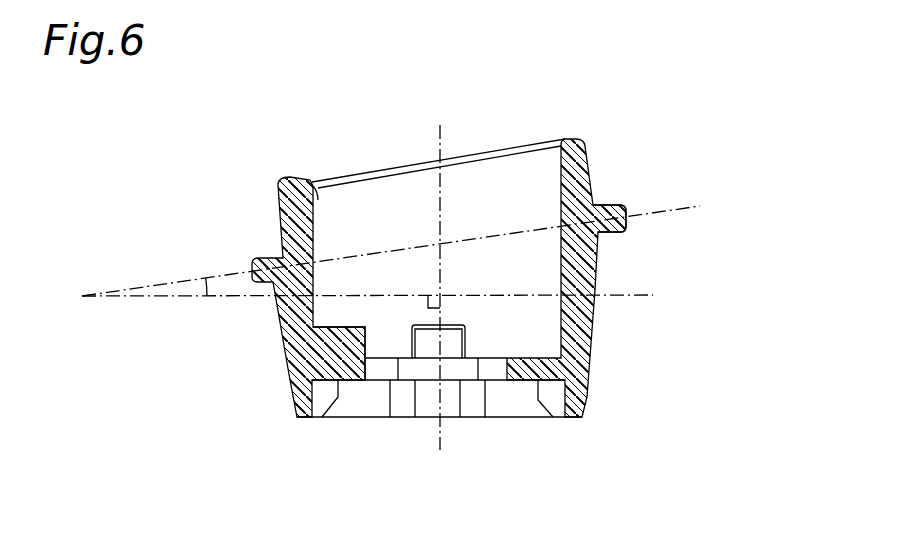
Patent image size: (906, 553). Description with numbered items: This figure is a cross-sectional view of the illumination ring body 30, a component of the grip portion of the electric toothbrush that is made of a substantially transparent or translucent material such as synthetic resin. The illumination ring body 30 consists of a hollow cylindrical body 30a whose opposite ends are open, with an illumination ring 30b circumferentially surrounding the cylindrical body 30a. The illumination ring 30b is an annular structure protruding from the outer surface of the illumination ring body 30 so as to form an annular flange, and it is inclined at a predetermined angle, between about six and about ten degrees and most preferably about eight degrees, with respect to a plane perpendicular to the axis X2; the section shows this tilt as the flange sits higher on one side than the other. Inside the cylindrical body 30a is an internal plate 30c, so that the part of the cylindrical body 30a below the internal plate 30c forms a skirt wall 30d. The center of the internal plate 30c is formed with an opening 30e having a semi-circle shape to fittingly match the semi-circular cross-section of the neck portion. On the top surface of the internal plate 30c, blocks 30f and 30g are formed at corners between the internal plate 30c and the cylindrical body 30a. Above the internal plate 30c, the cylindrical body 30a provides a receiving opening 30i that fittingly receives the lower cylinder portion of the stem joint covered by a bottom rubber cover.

The illumination ring body 30 is at (523, 139).
The cylindrical body 30a is at (581, 288).
The illumination ring 30b is at (627, 222).
The internal plate 30c is at (523, 383).
The skirt wall 30d is at (582, 398).
The opening 30e is at (377, 367).
The block 30f is at (338, 332).
The block 30g is at (466, 328).
The receiving opening 30i is at (314, 206).
The axis X2 is at (438, 273).